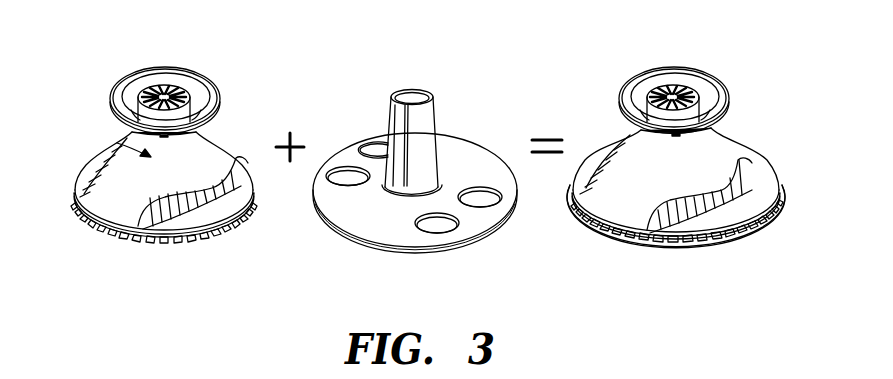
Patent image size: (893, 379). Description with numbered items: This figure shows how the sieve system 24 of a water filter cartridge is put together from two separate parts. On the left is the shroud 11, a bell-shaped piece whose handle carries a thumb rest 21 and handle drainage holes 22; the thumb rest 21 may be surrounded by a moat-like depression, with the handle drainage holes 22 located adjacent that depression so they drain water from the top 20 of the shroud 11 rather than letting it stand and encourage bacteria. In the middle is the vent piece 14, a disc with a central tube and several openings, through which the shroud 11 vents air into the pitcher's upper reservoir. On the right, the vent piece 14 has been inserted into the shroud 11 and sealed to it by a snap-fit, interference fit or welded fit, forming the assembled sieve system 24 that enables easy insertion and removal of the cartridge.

The shroud 11 is at (127, 137).
The vent piece 14 is at (468, 155).
The top of the shroud 20 is at (167, 80).
The thumb rest 21 is at (180, 92).
The handle drainage holes 22 is at (122, 100).
The sieve system 24 is at (749, 145).